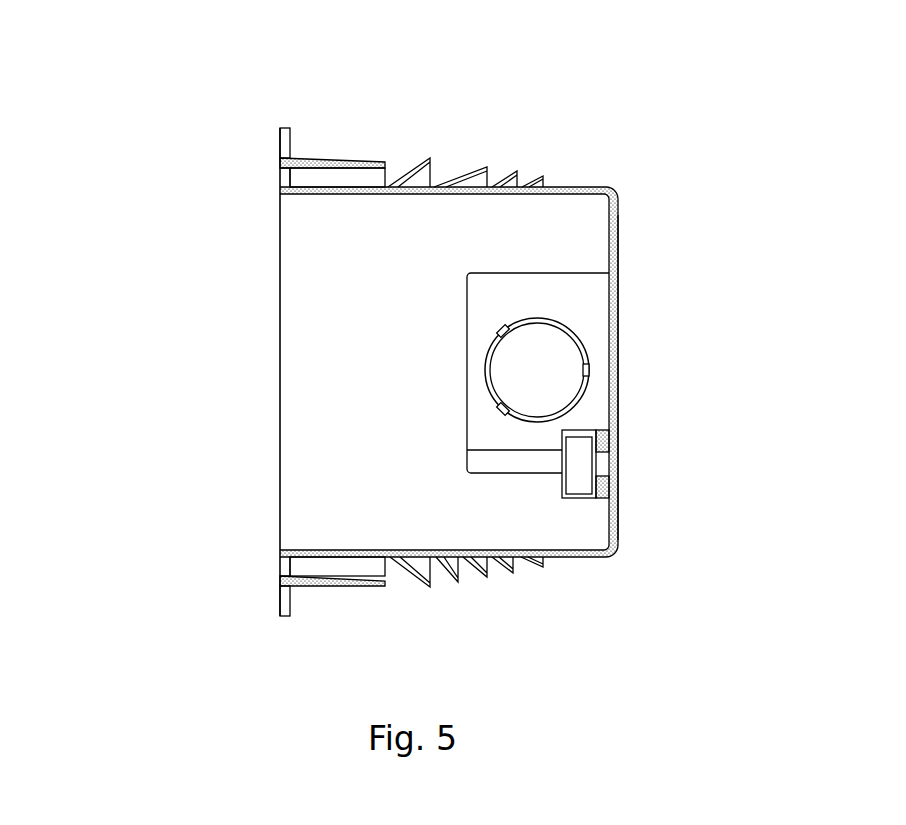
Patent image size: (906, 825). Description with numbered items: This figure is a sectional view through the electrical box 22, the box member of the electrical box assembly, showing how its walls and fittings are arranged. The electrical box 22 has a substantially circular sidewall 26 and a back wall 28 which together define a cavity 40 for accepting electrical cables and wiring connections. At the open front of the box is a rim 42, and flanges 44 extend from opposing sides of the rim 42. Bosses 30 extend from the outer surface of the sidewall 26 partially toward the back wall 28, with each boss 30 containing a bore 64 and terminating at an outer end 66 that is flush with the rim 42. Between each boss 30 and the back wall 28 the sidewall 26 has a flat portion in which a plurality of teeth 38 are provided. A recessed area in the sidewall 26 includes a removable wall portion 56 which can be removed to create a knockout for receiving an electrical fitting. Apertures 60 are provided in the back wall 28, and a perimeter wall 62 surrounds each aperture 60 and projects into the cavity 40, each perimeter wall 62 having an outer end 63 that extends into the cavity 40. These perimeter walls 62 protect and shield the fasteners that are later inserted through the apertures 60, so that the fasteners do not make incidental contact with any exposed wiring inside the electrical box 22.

The electrical box 22 is at (176, 134).
The sidewall 26 is at (565, 190).
The back wall 28 is at (609, 225).
The boss 30 is at (325, 158).
The teeth 38 is at (458, 176).
The cavity 40 is at (333, 387).
The rim 42 is at (281, 227).
The flange 44 is at (285, 128).
The removable wall portion 56 is at (551, 384).
The aperture 60 is at (600, 463).
The perimeter wall 62 is at (578, 498).
The outer end 63 is at (467, 450).
The bore 64 is at (315, 178).
The outer end 66 is at (281, 176).